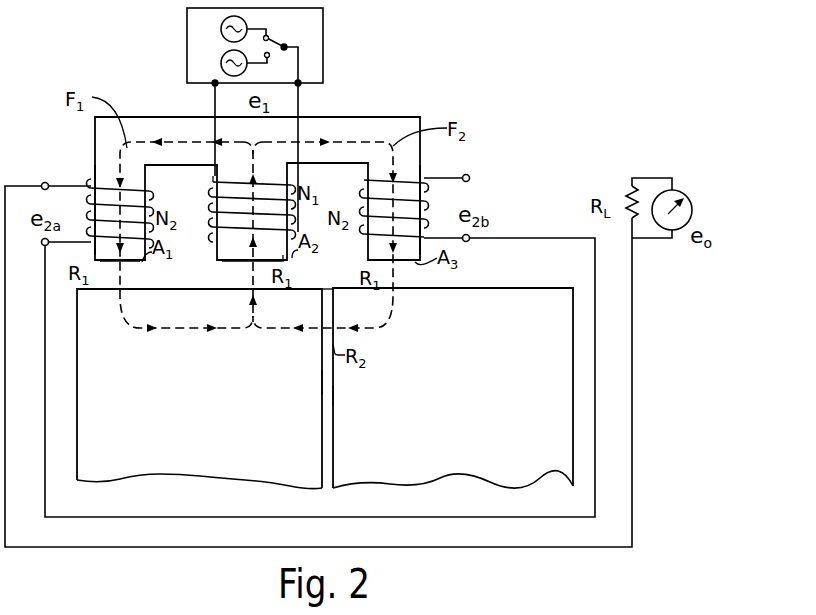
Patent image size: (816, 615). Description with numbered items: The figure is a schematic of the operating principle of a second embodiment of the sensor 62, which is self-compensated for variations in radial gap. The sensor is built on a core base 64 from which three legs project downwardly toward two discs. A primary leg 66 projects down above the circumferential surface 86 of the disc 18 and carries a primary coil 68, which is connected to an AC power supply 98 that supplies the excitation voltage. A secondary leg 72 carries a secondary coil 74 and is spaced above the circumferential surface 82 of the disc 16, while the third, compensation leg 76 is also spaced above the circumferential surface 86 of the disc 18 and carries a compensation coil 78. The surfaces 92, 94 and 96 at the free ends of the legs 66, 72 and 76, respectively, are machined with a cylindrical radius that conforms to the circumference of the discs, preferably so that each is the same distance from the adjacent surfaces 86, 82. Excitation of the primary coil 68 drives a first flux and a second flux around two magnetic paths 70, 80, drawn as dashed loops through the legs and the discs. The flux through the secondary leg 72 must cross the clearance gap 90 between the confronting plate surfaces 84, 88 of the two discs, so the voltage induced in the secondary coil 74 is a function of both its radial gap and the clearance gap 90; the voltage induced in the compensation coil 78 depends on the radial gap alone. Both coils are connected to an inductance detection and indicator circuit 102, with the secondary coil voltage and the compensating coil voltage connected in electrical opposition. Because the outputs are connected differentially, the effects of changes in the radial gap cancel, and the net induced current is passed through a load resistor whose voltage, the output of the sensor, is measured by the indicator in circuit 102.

The disc 16 is at (484, 417).
The disc 18 is at (204, 417).
The sensor 62 is at (350, 112).
The core base 64 is at (175, 116).
The primary leg 66 is at (213, 244).
The primary coil 68 is at (210, 197).
The magnetic path 70 is at (168, 331).
The secondary leg 72 is at (420, 163).
The secondary coil 74 is at (364, 189).
The compensation leg 76 is at (95, 166).
The compensation coil 78 is at (150, 191).
The magnetic path 80 is at (396, 312).
The circumferential surface 82 is at (325, 375).
The plate surface 84 is at (333, 395).
The circumferential surface 86 is at (244, 282).
The plate surface 88 is at (322, 383).
The clearance gap 90 is at (323, 295).
The surface 92 is at (288, 262).
The surface 94 is at (397, 262).
The surface 96 is at (132, 262).
The AC power supply 98 is at (322, 47).
The inductance detection and indicator circuit 102 is at (663, 172).